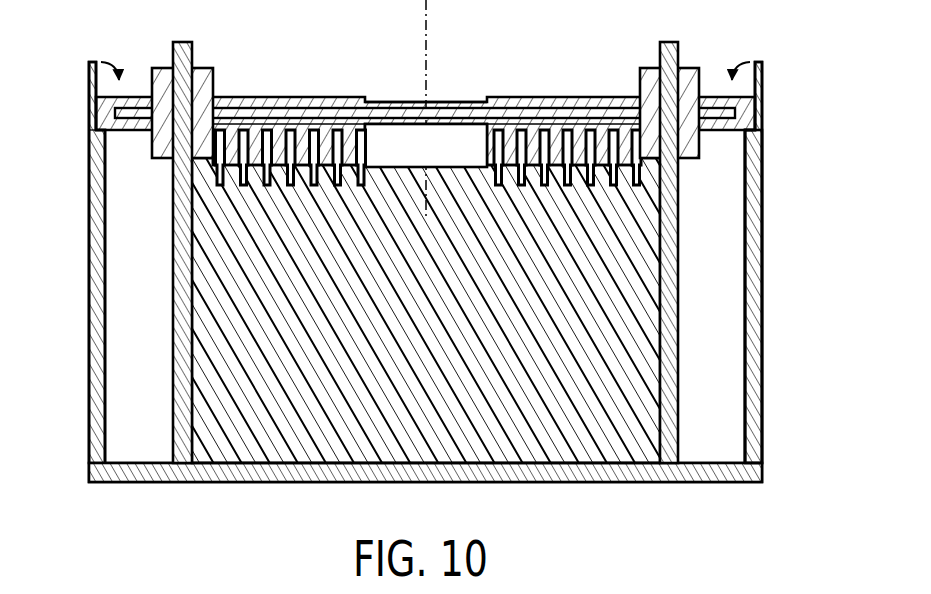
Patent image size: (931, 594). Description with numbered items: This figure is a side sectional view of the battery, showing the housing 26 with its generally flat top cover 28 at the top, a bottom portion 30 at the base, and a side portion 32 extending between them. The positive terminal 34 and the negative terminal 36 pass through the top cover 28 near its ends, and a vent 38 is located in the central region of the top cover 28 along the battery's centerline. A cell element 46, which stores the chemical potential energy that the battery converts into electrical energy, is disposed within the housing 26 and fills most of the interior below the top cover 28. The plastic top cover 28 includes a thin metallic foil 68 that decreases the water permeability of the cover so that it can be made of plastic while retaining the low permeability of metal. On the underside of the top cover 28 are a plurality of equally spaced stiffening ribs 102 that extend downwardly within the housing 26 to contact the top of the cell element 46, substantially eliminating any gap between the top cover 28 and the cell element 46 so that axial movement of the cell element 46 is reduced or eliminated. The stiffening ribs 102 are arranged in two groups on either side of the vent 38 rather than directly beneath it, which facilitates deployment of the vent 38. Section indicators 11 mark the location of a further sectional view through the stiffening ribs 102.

The section line 11 is at (360, 88).
The housing 26 is at (763, 215).
The top cover 28 is at (607, 97).
The bottom portion 30 is at (583, 482).
The side portion 32 is at (762, 404).
The positive terminal 34 is at (183, 42).
The negative terminal 36 is at (667, 42).
The vent 38 is at (450, 100).
The cell element 46 is at (432, 338).
The metallic foil 68 is at (559, 113).
The stiffening ribs 102 is at (250, 186).